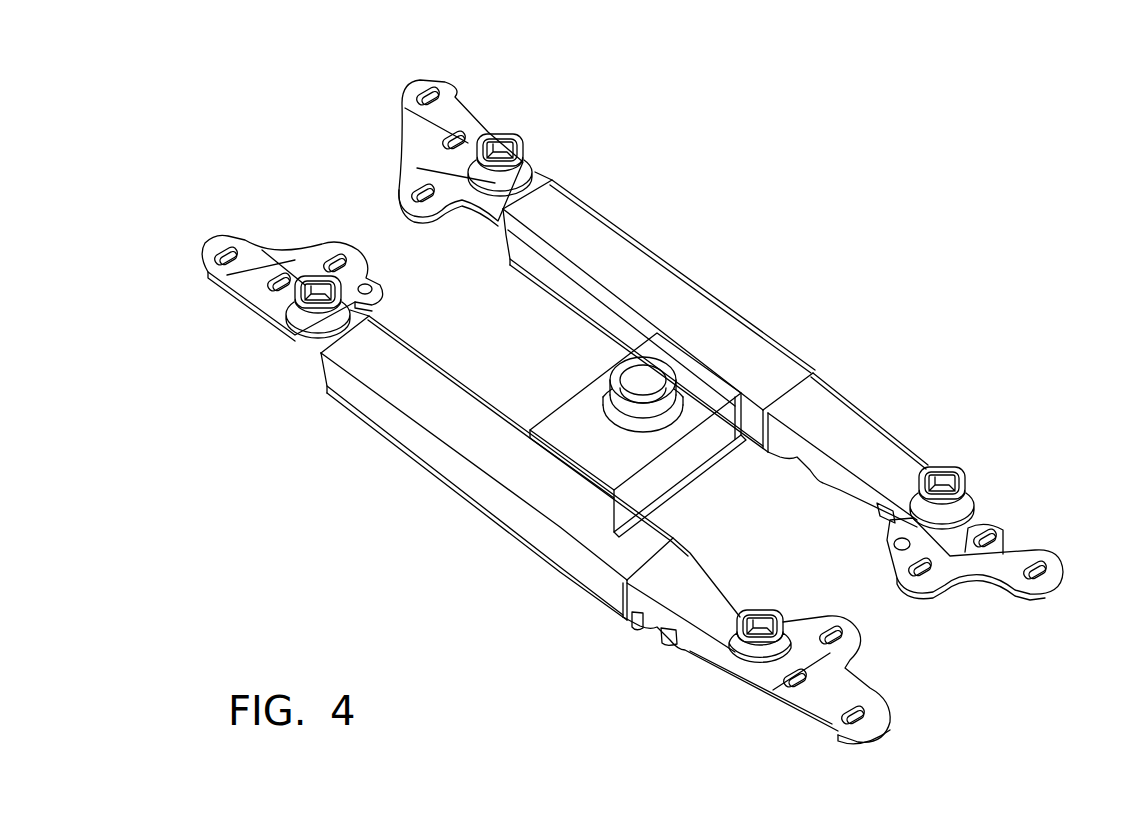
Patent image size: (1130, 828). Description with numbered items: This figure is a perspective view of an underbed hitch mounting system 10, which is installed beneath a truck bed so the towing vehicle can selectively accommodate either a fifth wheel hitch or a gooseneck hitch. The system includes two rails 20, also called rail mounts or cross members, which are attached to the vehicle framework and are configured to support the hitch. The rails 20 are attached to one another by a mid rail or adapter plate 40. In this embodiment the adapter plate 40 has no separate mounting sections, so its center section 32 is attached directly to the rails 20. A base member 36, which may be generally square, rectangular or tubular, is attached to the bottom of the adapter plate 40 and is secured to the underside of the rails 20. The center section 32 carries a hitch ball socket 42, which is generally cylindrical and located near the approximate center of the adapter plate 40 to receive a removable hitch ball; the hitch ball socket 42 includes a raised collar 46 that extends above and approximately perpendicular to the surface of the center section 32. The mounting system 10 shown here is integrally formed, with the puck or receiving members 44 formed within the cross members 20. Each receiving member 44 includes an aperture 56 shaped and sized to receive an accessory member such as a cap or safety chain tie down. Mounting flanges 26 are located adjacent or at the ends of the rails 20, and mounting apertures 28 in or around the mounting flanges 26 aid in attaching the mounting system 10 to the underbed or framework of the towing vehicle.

The underbed hitch mounting system 10 is at (849, 170).
The rail 20 is at (597, 247).
The mounting flange 26 is at (415, 85).
The mounting aperture 28 is at (460, 143).
The center section 32 is at (570, 423).
The base member 36 is at (693, 472).
The adapter plate 40 is at (602, 356).
The hitch ball socket 42 is at (643, 383).
The receiving member 44 is at (515, 177).
The raised collar 46 is at (667, 408).
The aperture 56 is at (505, 146).